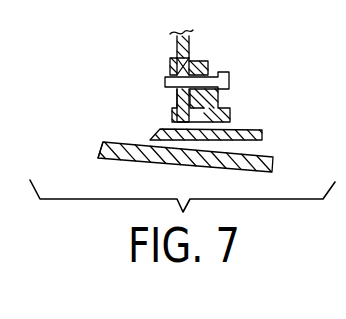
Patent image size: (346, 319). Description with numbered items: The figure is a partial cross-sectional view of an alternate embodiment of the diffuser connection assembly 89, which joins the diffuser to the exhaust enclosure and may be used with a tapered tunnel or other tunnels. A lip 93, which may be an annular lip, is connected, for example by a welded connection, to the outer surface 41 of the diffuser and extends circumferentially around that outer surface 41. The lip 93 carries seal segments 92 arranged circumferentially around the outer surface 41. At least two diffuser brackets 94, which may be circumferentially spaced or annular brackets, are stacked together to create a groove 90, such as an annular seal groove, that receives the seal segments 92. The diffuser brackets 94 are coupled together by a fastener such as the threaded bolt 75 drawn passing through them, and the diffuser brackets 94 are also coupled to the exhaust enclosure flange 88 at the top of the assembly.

The diffuser connection assembly 89 is at (58, 78).
The exhaust enclosure flange 88 is at (170, 70).
The diffuser brackets 94 is at (188, 68).
The threaded bolt 75 is at (229, 79).
The groove 90 is at (207, 108).
The seal segments 92 is at (224, 121).
The lip 93 is at (275, 158).
The outer surface 41 is at (117, 140).